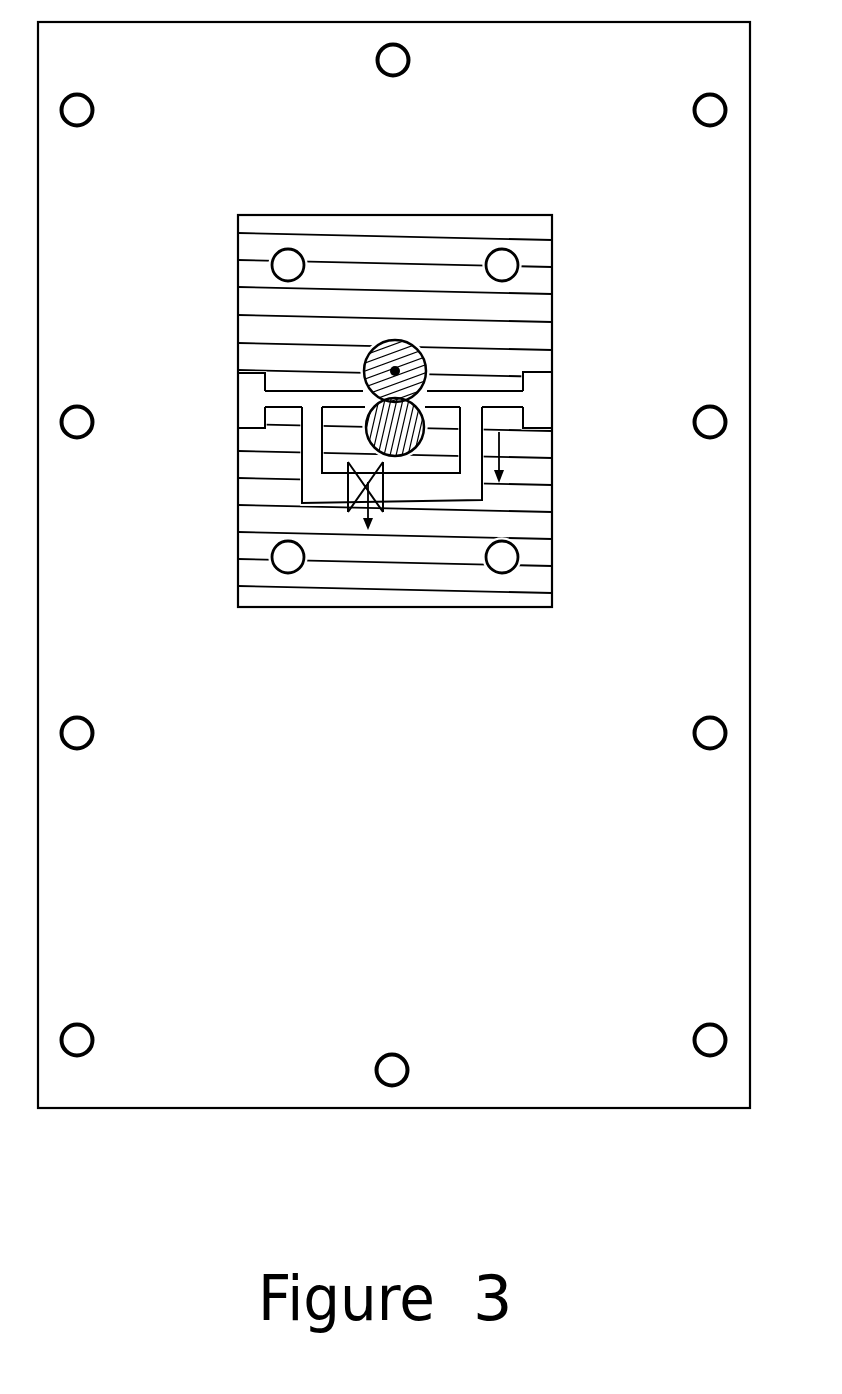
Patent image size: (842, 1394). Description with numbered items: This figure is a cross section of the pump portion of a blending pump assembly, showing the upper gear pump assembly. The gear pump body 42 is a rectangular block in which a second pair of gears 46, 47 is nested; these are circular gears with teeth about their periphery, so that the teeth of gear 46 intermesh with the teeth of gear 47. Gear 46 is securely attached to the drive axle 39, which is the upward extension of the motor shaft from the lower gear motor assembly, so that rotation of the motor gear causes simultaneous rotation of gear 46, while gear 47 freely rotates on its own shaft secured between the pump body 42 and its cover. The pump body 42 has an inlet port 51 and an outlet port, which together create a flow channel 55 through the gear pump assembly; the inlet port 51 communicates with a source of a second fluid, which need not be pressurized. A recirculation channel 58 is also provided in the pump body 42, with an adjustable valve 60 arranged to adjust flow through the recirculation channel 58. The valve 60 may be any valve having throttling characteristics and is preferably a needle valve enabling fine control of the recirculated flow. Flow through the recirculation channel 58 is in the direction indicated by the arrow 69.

The drive axle 39 is at (385, 345).
The gear pump body 42 is at (552, 520).
The gear 46 is at (410, 347).
The gear 47 is at (367, 405).
The inlet port 51 is at (250, 415).
The flow channel 55 is at (498, 390).
The recirculation channel 58 is at (447, 500).
The adjustable valve 60 is at (343, 524).
The arrow 69 is at (503, 457).